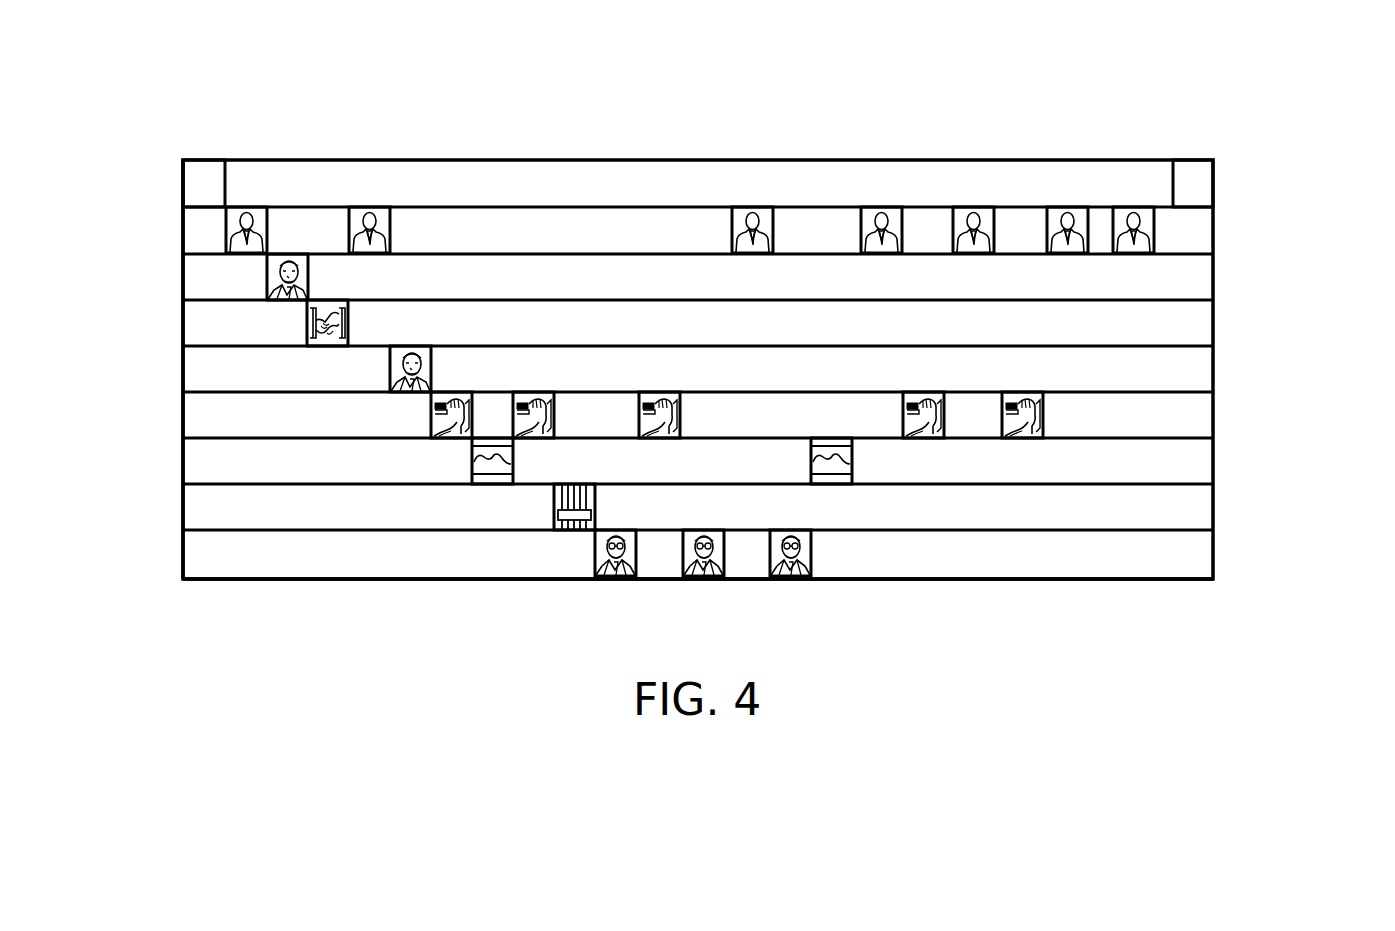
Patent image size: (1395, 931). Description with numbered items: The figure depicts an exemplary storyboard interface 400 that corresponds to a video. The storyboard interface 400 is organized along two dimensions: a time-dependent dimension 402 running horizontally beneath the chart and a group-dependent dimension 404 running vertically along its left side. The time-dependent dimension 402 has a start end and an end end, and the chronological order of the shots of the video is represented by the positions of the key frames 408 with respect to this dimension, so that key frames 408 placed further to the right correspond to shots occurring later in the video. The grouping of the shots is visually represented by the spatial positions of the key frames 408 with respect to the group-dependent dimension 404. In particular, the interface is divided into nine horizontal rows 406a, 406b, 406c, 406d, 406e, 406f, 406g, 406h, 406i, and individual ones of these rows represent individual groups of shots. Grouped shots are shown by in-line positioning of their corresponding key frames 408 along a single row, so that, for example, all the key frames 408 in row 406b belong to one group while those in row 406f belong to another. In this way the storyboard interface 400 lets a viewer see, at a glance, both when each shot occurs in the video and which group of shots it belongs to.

The storyboard interface 400 is at (744, 113).
The time-dependent dimension 402 is at (422, 580).
The group-dependent dimension 404 is at (178, 427).
The row 406a is at (1254, 180).
The row 406b is at (771, 183).
The row 406c is at (1254, 277).
The row 406d is at (1254, 323).
The row 406e is at (1254, 370).
The row 406f is at (1254, 415).
The row 406g is at (1254, 459).
The row 406h is at (1254, 504).
The row 406i is at (1254, 547).
The key frames 408 is at (376, 207).